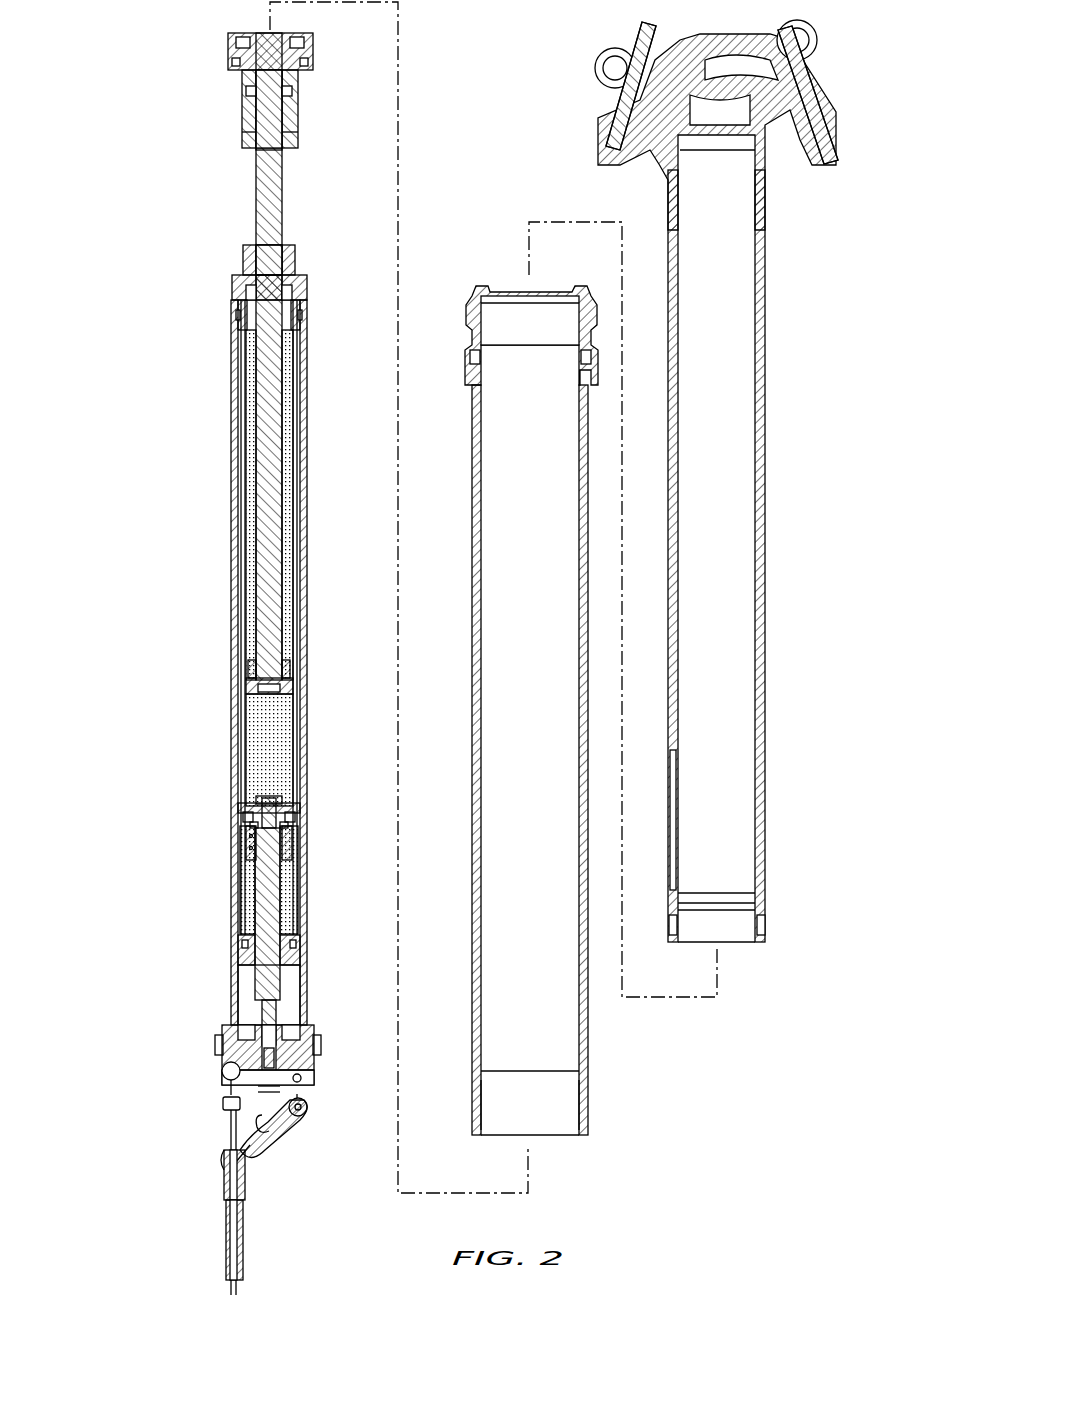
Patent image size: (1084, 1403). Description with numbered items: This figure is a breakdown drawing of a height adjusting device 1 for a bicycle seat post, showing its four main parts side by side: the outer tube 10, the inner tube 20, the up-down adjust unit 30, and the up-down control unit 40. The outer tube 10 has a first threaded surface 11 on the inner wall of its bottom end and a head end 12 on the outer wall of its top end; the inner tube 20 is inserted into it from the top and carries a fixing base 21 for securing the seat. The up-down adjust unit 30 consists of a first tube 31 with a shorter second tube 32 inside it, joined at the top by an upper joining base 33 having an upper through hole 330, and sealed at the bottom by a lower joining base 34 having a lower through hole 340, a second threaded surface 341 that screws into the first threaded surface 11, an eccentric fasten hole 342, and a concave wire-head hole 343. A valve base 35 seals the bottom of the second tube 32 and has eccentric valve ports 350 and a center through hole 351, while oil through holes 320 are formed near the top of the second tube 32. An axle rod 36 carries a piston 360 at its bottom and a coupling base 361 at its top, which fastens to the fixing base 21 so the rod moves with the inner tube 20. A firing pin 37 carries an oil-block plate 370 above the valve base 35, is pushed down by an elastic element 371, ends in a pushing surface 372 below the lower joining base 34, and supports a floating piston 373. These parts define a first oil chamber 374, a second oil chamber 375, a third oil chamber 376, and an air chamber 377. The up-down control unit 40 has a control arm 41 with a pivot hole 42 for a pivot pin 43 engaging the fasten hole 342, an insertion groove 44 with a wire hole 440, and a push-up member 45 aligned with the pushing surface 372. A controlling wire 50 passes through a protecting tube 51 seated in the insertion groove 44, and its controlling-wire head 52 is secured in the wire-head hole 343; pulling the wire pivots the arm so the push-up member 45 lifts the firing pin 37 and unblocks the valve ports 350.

The height adjusting device 1 is at (800, 606).
The outer tube 10 is at (586, 1052).
The first threaded surface 11 is at (585, 1096).
The head end 12 is at (474, 312).
The inner tube 20 is at (758, 490).
The fixing base 21 is at (773, 160).
The up-down adjust unit 30 is at (210, 506).
The first tube 31 is at (232, 378).
The second tube 32 is at (243, 572).
The upper joining base 33 is at (246, 262).
The lower joining base 34 is at (220, 1060).
The valve base 35 is at (234, 806).
The axle rod 36 is at (268, 398).
The firing pin 37 is at (268, 912).
The up-down control unit 40 is at (307, 1198).
The control arm 41 is at (283, 1130).
The pivot hole 42 is at (302, 1118).
The pivot pin 43 is at (305, 1112).
The insertion groove 44 is at (246, 1160).
The push-up member 45 is at (275, 1134).
The controlling wire 50 is at (232, 1285).
The protecting tube 51 is at (226, 1192).
The controlling-wire head 52 is at (226, 1106).
The oil through holes 320 is at (232, 320).
The upper through hole 330 is at (258, 257).
The lower through hole 340 is at (232, 1082).
The second threaded surface 341 is at (220, 1047).
The fasten hole 342 is at (302, 1080).
The wire-head hole 343 is at (230, 1068).
The valve ports 350 is at (248, 820).
The center through hole 351 is at (250, 826).
The piston 360 is at (246, 665).
The coupling base 361 is at (262, 110).
The oil-block plate 370 is at (286, 808).
The elastic element 371 is at (252, 845).
The pushing surface 372 is at (278, 1094).
The floating piston 373 is at (300, 963).
The first oil chamber 374 is at (252, 421).
The second oil chamber 375 is at (273, 727).
The third oil chamber 376 is at (296, 846).
The air chamber 377 is at (290, 1004).
The wire hole 440 is at (221, 1148).